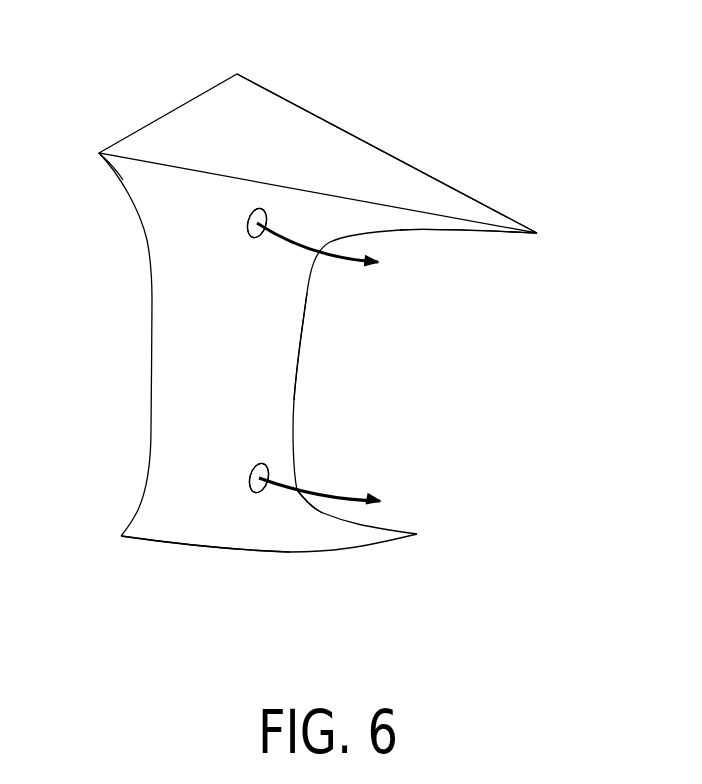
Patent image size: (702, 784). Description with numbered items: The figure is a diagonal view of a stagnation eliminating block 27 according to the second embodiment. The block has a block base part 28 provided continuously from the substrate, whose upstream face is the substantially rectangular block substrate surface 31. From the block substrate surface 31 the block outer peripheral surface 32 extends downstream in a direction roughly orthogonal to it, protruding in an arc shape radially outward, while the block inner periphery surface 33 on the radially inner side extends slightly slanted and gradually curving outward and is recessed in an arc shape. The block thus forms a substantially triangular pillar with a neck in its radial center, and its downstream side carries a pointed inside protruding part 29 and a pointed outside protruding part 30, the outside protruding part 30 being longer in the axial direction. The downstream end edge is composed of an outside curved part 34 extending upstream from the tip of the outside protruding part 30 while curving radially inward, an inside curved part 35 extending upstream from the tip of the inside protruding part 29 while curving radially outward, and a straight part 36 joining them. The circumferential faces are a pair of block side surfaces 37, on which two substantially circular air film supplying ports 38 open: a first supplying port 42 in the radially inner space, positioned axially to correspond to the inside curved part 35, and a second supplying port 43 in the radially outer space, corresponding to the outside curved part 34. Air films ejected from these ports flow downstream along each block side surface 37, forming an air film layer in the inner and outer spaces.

The stagnation eliminating block 27 is at (473, 141).
The block base part 28 is at (175, 550).
The inside protruding part 29 is at (397, 538).
The outside protruding part 30 is at (500, 210).
The block substrate surface 31 is at (122, 178).
The block outer peripheral surface 32 is at (285, 142).
The block inner periphery surface 33 is at (255, 553).
The outside curved part 34 is at (430, 252).
The inside curved part 35 is at (335, 477).
The straight part 36 is at (302, 366).
The block side surface 37 is at (168, 429).
The air film supplying port 38 is at (257, 350).
The first supplying port 42 is at (255, 492).
The second supplying port 43 is at (248, 226).